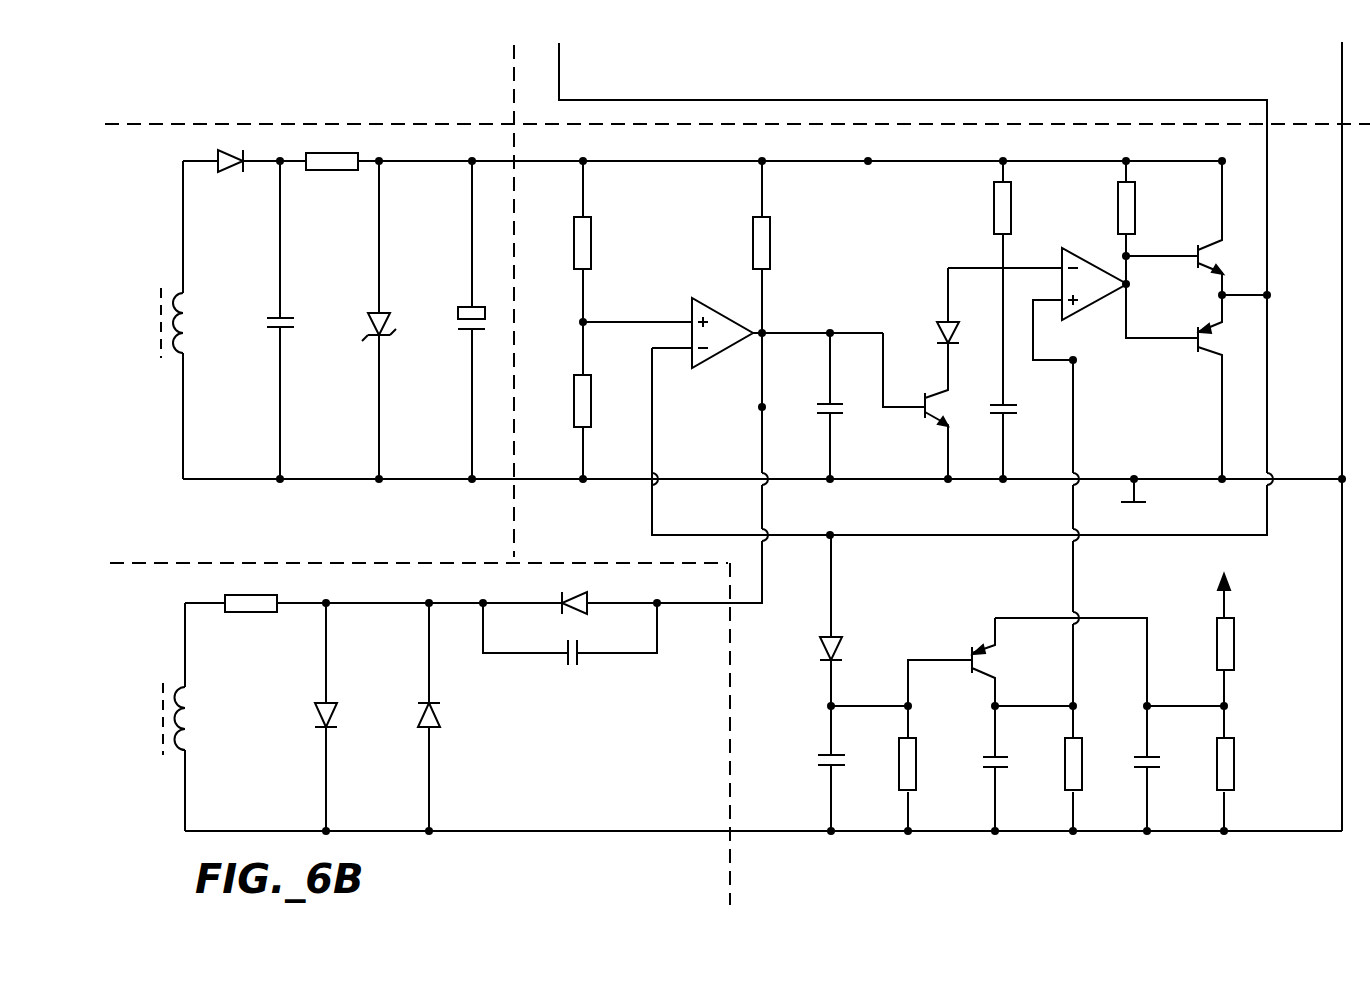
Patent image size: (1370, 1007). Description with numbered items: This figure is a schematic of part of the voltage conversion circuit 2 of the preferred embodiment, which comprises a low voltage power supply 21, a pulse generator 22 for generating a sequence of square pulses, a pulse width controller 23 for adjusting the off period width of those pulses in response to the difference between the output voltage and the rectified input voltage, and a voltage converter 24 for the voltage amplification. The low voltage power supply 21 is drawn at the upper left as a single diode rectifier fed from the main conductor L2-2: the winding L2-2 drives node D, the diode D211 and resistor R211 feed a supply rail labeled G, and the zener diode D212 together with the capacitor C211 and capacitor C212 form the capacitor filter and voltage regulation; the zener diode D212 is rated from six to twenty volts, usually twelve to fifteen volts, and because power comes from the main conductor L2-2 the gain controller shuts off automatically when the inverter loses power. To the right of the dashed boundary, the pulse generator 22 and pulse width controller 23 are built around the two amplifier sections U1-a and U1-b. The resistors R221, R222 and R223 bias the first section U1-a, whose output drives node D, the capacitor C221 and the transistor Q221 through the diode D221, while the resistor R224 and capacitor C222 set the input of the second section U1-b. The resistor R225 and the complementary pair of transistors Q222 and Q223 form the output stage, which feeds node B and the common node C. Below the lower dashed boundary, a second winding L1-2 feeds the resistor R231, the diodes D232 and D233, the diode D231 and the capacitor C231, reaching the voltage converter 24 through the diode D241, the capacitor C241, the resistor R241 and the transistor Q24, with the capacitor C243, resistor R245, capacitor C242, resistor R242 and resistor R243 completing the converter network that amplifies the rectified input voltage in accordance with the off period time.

The diode D211 is at (234, 176).
The resistor R211 is at (329, 178).
The capacitor C211 is at (258, 322).
The zener diode D212 is at (359, 322).
The capacitor C212 is at (449, 320).
The main conductor L2-2 is at (158, 322).
The resistor R221 is at (558, 241).
The resistor R222 is at (558, 402).
The resistor R223 is at (735, 247).
The operational amplifier U1-a is at (733, 319).
The capacitor C221 is at (806, 406).
The transistor Q221 is at (916, 408).
The diode D221 is at (973, 305).
The resistor R224 is at (969, 281).
The capacitor C222 is at (1026, 430).
The operational amplifier U1-b is at (1080, 296).
The resistor R225 is at (1127, 247).
The transistor Q222 is at (1189, 228).
The transistor Q223 is at (1201, 389).
The resistor R231 is at (255, 621).
The inductor winding L1-2 is at (157, 725).
The diode D232 is at (299, 717).
The diode D233 is at (403, 717).
The diode D231 is at (568, 595).
The capacitor C231 is at (570, 650).
The diode D241 is at (801, 673).
The capacitor C241 is at (801, 770).
The resistor R241 is at (873, 768).
The transistor Q24 is at (978, 664).
The capacitor C243 is at (973, 770).
The resistor R245 is at (1047, 768).
The capacitor C242 is at (1126, 768).
The resistor R242 is at (1207, 639).
The resistor R243 is at (1199, 768).
The voltage conversion circuit 2 is at (649, 148).
The low voltage power supply 21 is at (479, 508).
The pulse generator 22 is at (582, 508).
The pulse width controller 23 is at (657, 590).
The voltage converter 24 is at (844, 584).
The node G is at (530, 148).
The node B is at (869, 174).
The node D is at (742, 410).
The node C is at (1133, 473).